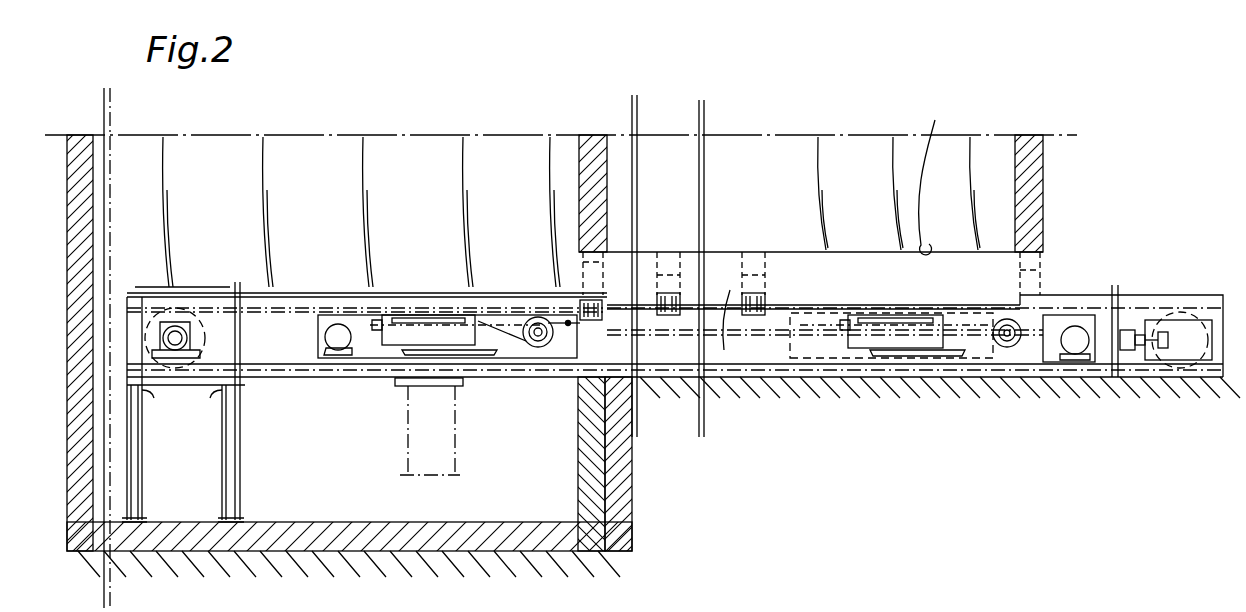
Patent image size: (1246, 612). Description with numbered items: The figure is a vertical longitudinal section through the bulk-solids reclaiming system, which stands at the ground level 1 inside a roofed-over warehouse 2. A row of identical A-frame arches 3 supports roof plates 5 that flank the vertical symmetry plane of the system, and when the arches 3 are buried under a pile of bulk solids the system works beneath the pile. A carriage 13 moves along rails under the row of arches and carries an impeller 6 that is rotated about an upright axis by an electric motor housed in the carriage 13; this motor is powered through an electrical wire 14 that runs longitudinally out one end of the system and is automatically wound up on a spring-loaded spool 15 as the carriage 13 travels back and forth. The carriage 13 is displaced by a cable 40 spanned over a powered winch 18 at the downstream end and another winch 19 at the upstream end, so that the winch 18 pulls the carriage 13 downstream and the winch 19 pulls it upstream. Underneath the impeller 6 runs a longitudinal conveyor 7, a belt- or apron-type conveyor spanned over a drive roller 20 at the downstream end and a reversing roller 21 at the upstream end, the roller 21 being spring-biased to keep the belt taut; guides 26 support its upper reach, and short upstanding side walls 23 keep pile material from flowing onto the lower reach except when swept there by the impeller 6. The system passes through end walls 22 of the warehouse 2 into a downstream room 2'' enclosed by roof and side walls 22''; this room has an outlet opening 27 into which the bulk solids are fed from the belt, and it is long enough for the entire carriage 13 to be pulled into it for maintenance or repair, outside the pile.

The ground level 1 is at (886, 382).
The warehouse 2 is at (561, 176).
The downstream room 2'' is at (361, 193).
The A-frame arch 3 is at (575, 260).
The roof plate 5 is at (930, 176).
The impeller 6 is at (458, 356).
The longitudinal conveyor 7 is at (720, 287).
The carriage 13 is at (412, 312).
The electrical wire 14 is at (566, 322).
The spring-loaded spool 15 is at (535, 320).
The powered winch 18 is at (336, 316).
The winch 19 is at (1076, 350).
The drive roller 20 is at (178, 326).
The reversing roller 21 is at (1178, 350).
The end wall 22 is at (833, 323).
The roof and side walls 22'' is at (349, 348).
The side wall 23 is at (814, 365).
The guide 26 is at (730, 350).
The outlet opening 27 is at (420, 384).
The cable 40 is at (350, 348).